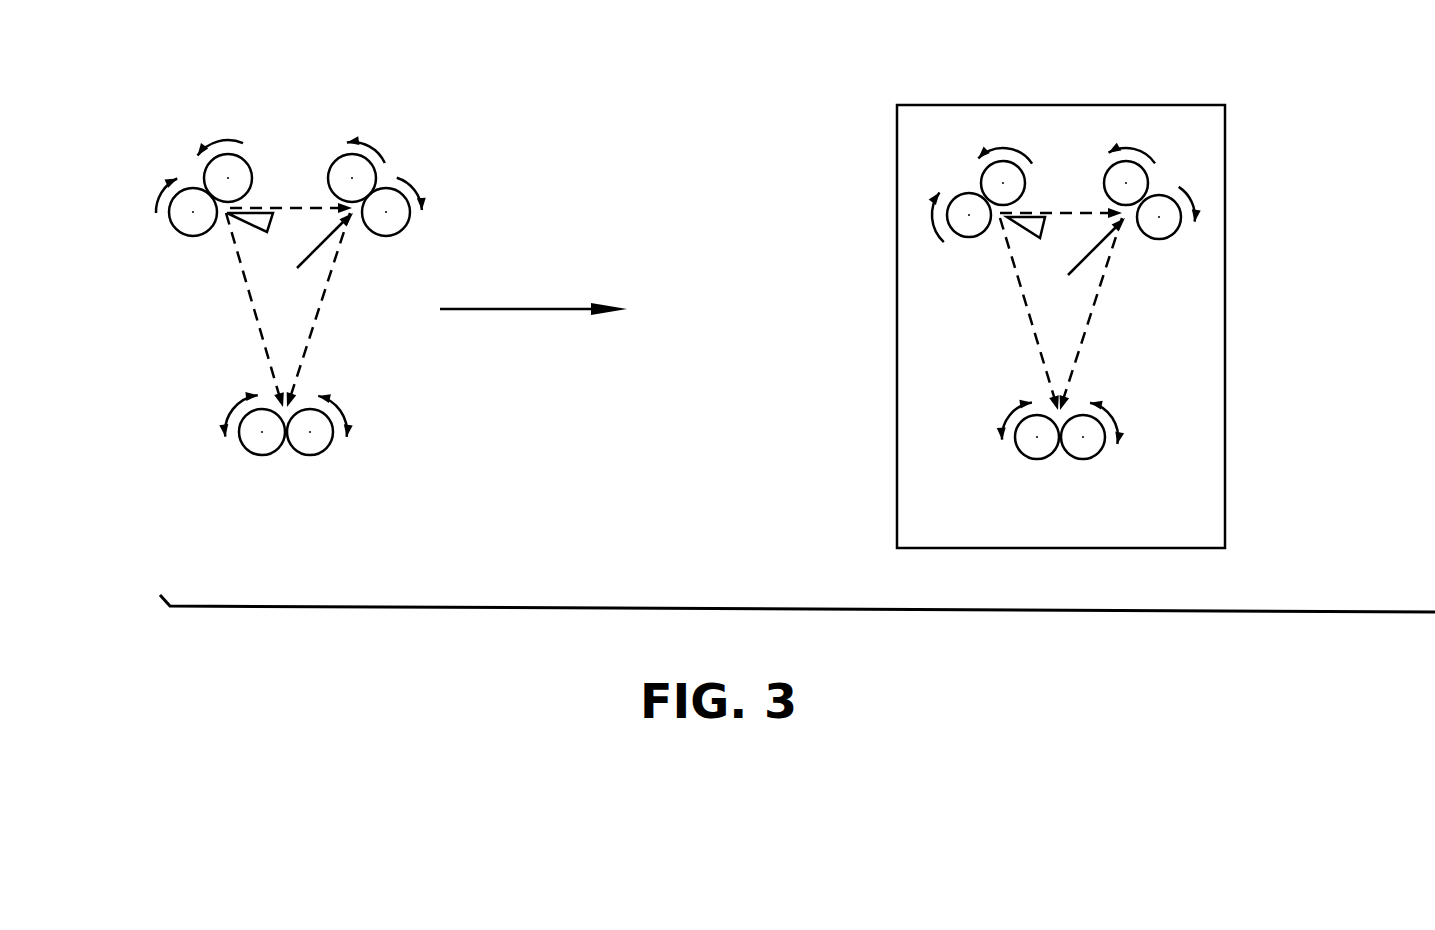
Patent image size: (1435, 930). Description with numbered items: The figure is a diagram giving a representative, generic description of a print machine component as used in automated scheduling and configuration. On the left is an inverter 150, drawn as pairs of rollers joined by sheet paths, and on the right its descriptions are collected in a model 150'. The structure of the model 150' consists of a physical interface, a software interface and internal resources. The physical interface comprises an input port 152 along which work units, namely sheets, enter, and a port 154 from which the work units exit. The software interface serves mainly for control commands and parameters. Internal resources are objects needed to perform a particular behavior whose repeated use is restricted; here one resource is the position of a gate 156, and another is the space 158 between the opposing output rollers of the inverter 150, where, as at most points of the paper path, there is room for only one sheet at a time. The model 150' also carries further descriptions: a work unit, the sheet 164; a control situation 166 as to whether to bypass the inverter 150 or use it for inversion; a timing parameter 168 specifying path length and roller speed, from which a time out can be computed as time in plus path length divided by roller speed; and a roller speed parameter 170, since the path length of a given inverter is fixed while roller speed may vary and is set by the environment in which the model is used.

The inverter 150 is at (291, 347).
The model 150' is at (1082, 280).
The input port 152 is at (955, 168).
The port 154 is at (1180, 177).
The gate 156 is at (1037, 215).
The space 158 is at (1180, 168).
The sheet 164 is at (800, 511).
The control situation 166 is at (811, 333).
The timing parameter 168 is at (1337, 373).
The roller speed parameter 170 is at (1339, 558).